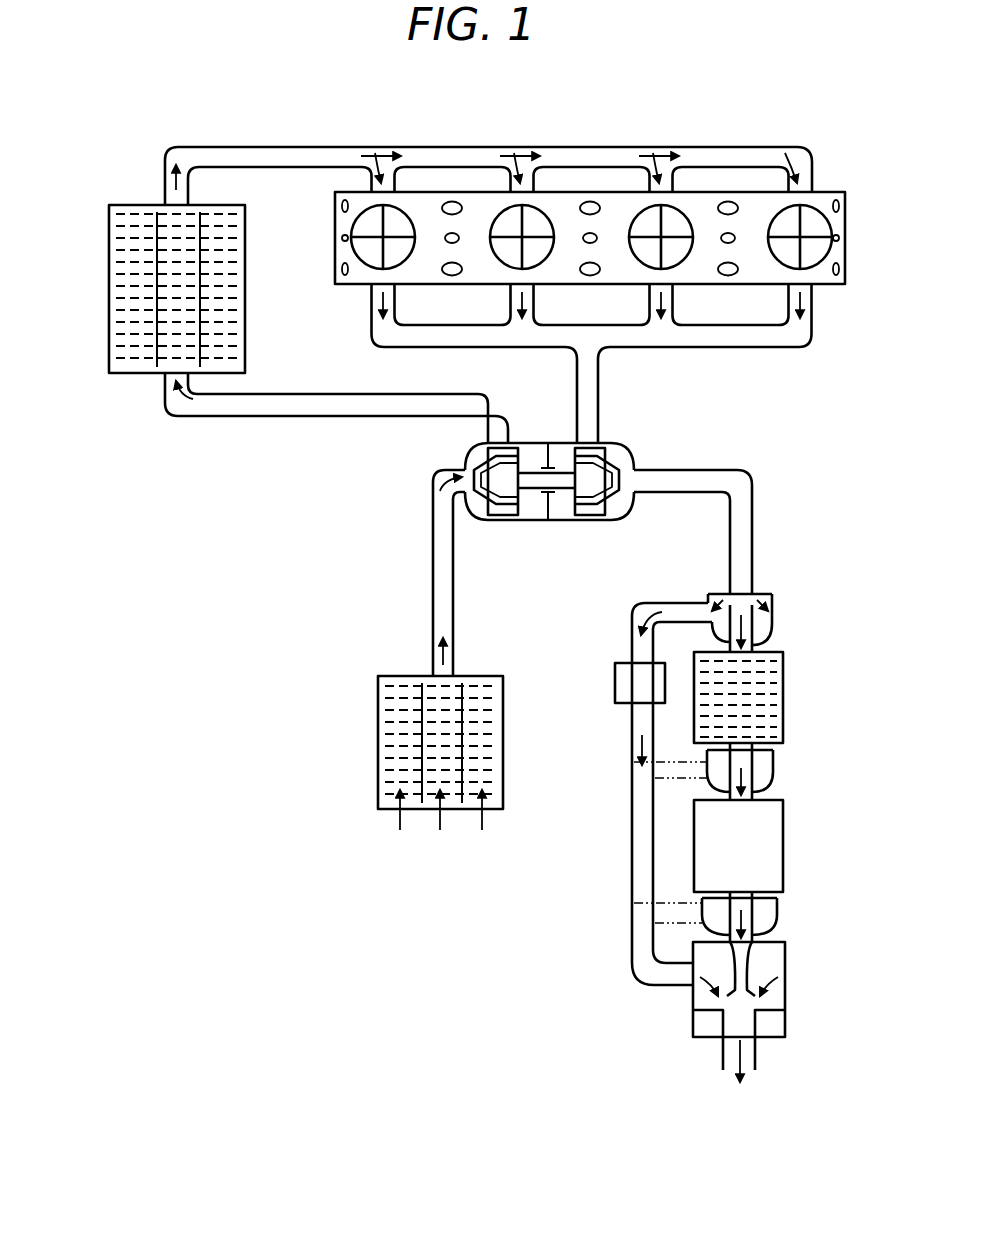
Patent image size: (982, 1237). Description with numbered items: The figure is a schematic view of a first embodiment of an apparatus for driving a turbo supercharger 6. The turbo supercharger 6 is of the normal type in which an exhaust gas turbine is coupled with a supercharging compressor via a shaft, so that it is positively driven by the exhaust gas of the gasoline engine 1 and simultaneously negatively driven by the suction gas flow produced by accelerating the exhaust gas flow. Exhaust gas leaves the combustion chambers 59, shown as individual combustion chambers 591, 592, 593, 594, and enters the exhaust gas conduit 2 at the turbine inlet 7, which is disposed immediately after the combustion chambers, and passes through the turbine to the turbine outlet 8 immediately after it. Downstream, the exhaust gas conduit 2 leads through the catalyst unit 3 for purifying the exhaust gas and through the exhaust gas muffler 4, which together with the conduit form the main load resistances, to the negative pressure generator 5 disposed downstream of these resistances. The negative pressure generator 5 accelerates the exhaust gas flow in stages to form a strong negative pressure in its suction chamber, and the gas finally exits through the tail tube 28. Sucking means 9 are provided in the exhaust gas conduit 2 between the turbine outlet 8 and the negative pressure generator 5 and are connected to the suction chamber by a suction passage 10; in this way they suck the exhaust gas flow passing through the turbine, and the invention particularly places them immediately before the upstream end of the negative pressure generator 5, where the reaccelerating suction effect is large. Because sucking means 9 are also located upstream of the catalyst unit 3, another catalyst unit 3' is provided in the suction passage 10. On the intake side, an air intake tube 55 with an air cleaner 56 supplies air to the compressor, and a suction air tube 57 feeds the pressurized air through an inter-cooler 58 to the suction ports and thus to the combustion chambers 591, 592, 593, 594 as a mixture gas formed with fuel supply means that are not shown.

The gasoline engine 1 is at (576, 270).
The exhaust gas conduit 2 is at (734, 470).
The catalyst unit 3 is at (759, 697).
The catalyst unit 3' is at (619, 684).
The exhaust gas muffler 4 is at (773, 839).
The negative pressure generator 5 is at (782, 971).
The turbo supercharger 6 is at (552, 504).
The turbine inlet 7 is at (586, 441).
The turbine outlet 8 is at (634, 482).
The sucking means 9 is at (768, 626).
The suction passage 10 is at (636, 856).
The tail tube 28 is at (754, 1063).
The air intake tube 55 is at (440, 552).
The air cleaner 56 is at (380, 734).
The suction air tube 57 is at (231, 150).
The inter-cooler 58 is at (118, 275).
The combustion chambers 59 is at (560, 183).
The combustion chamber 591 is at (368, 223).
The combustion chamber 592 is at (510, 227).
The combustion chamber 593 is at (653, 224).
The combustion chamber 594 is at (787, 225).